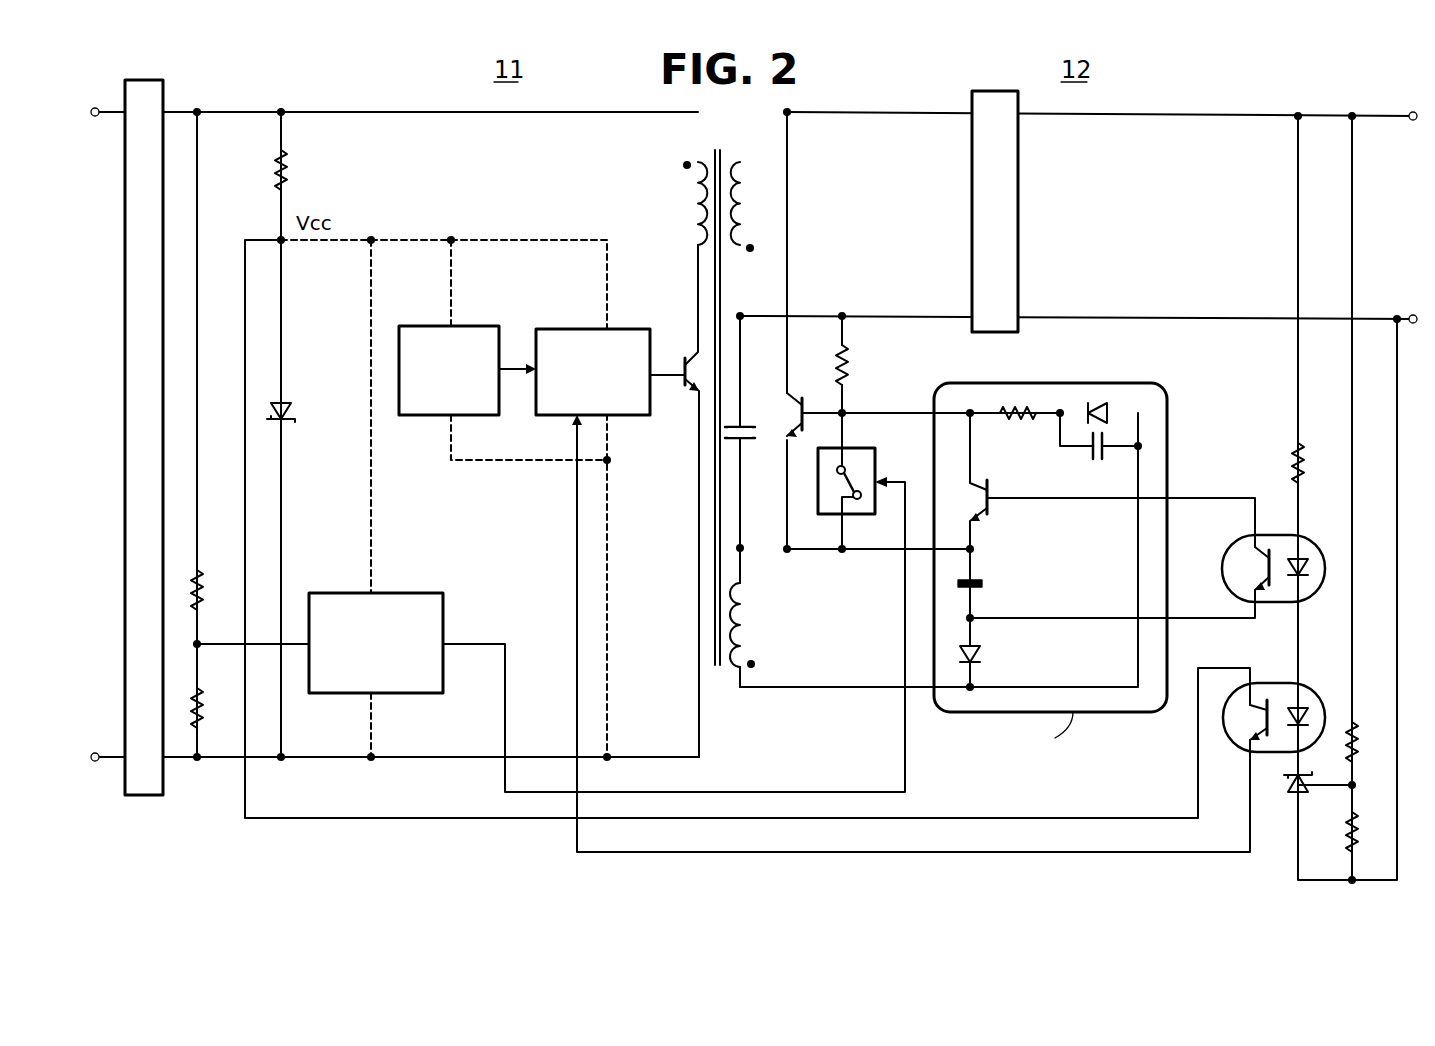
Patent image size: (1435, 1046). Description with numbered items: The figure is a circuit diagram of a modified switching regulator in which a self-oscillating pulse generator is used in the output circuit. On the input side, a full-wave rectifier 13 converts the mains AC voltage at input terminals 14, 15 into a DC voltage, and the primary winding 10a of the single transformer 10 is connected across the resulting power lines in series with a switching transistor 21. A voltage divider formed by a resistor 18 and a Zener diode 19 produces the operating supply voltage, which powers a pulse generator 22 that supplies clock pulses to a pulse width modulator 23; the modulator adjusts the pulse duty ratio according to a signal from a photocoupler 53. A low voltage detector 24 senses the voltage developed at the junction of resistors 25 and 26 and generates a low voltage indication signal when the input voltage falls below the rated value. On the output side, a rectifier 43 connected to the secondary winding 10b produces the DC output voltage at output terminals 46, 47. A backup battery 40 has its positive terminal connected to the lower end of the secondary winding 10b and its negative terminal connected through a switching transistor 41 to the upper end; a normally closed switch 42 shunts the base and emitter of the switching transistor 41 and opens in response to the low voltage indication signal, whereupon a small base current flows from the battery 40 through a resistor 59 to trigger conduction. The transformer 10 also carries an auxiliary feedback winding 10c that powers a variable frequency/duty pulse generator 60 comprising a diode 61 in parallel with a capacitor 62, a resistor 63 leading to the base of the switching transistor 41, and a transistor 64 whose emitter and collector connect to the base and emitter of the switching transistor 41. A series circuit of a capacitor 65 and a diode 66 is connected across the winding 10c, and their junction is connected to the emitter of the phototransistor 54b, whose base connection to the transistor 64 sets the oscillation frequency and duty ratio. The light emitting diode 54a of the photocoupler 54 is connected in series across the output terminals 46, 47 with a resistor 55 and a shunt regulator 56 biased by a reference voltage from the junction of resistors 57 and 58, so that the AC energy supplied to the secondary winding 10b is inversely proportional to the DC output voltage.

The transformer 10 is at (719, 403).
The primary winding 10a is at (698, 225).
The secondary winding 10b is at (744, 205).
The auxiliary secondary winding 10c is at (744, 623).
The full-wave rectifier 13 is at (144, 80).
The input terminal 14 is at (99, 107).
The input terminal 15 is at (97, 753).
The resistor 18 is at (286, 170).
The Zener diode 19 is at (288, 407).
The switching transistor 21 is at (675, 387).
The pulse generator 22 is at (481, 326).
The pulse width modulator 23 is at (620, 329).
The low voltage detector 24 is at (417, 593).
The resistor 25 is at (201, 590).
The resistor 26 is at (201, 700).
The battery 40 is at (742, 422).
The switching transistor 41 is at (792, 398).
The normally closed switch 42 is at (874, 466).
The rectifier 43 is at (995, 91).
The output terminal 46 is at (1412, 111).
The output terminal 47 is at (1412, 314).
The photocoupler 53 is at (1276, 684).
The photocoupler 54 is at (1271, 577).
The light emitting diode 54a is at (1302, 578).
The phototransistor 54b is at (1262, 566).
The resistor 55 is at (1302, 460).
The shunt regulator 56 is at (1290, 792).
The resistor 57 is at (1356, 740).
The resistor 58 is at (1356, 838).
The resistor 59 is at (846, 376).
The variable frequency/duty pulse generator 60 is at (1167, 388).
The diode 61 is at (1108, 400).
The capacitor 62 is at (1094, 456).
The resistor 63 is at (1030, 407).
The transistor 64 is at (990, 496).
The capacitor 65 is at (982, 584).
The diode 66 is at (982, 656).